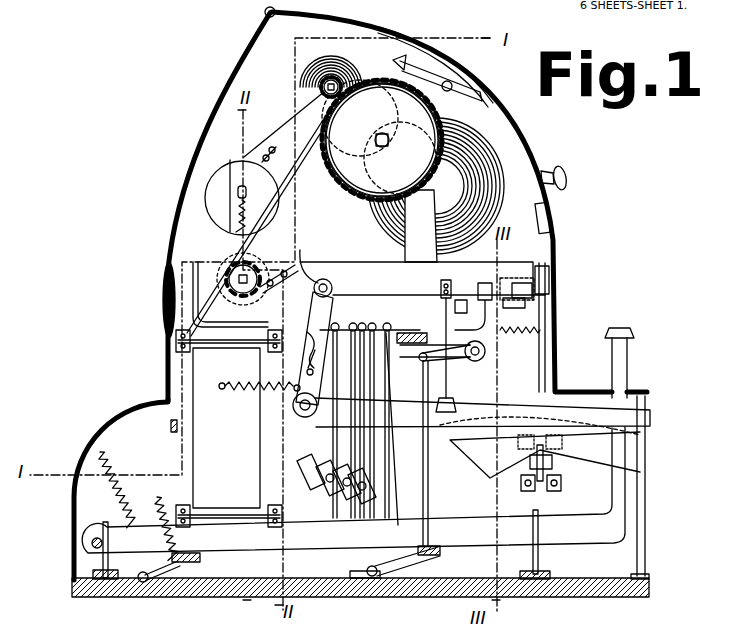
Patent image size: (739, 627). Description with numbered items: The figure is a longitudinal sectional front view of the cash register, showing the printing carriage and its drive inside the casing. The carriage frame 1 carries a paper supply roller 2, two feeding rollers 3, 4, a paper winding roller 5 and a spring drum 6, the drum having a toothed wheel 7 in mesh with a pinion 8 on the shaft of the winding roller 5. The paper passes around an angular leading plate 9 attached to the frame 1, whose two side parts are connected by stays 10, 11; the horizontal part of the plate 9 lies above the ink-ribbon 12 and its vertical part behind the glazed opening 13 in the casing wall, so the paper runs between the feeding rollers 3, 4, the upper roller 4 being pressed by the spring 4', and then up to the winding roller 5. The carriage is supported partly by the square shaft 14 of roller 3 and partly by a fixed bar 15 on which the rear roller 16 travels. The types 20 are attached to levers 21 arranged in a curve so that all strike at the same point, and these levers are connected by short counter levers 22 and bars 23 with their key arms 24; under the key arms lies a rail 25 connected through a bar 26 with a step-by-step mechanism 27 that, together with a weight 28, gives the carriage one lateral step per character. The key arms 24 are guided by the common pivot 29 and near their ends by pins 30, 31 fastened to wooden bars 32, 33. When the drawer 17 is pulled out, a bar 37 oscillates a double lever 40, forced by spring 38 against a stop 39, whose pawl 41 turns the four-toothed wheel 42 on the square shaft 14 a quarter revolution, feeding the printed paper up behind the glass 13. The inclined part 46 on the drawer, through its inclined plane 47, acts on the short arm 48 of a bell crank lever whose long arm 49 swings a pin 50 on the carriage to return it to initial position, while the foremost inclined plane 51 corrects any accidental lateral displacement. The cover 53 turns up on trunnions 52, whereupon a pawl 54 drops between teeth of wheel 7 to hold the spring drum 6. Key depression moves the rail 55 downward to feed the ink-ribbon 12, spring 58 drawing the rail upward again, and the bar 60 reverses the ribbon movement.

The carriage frame 1 is at (353, 270).
The paper supply roller 2 is at (487, 178).
The feeding roller 3 is at (272, 222).
The feeding roller 4 is at (232, 198).
The spring 4' is at (255, 209).
The paper winding roller 5 is at (344, 66).
The spring drum 6 is at (348, 188).
The toothed wheel 7 is at (430, 110).
The pinion 8 is at (318, 100).
The angular leading plate 9 is at (190, 342).
The stay 10 is at (305, 256).
The stay 11 is at (273, 155).
The ink-ribbon 12 is at (243, 342).
The glazed opening 13 is at (162, 300).
The square shaft 14 is at (243, 282).
The fixed bar 15 is at (520, 300).
The rear roller 16 is at (518, 276).
The drawer 17 is at (637, 545).
The types 20 is at (316, 492).
The levers 21 is at (314, 458).
The counter levers 22 is at (350, 322).
The bars 23 is at (394, 472).
The key arms 24 is at (335, 540).
The rail 25 is at (440, 553).
The bar 26 is at (428, 478).
The step-by-step mechanism 27 is at (478, 352).
The weight 28 is at (455, 404).
The common pivot 29 is at (100, 536).
The pins 30 is at (108, 540).
The pins 31 is at (539, 530).
The wooden bar 32 is at (103, 580).
The wooden bar 33 is at (556, 570).
The bar 37 is at (512, 405).
The spring 38 is at (226, 428).
The stop 39 is at (290, 386).
The double lever 40 is at (306, 366).
The pawl 41 is at (306, 345).
The 4-toothed wheel 42 is at (202, 262).
The inclined part 46 is at (582, 440).
The inclined plane 47 is at (520, 482).
The short arm 48 is at (543, 485).
The long arm 49 is at (540, 354).
The pin 50 is at (552, 278).
The foremost inclined plane 51 is at (480, 478).
The trunnions 52 is at (262, 13).
The cover 53 is at (452, 68).
The pawl 54 is at (412, 62).
The rail 55 is at (190, 554).
The spring 58 is at (160, 502).
The bar 60 is at (170, 426).